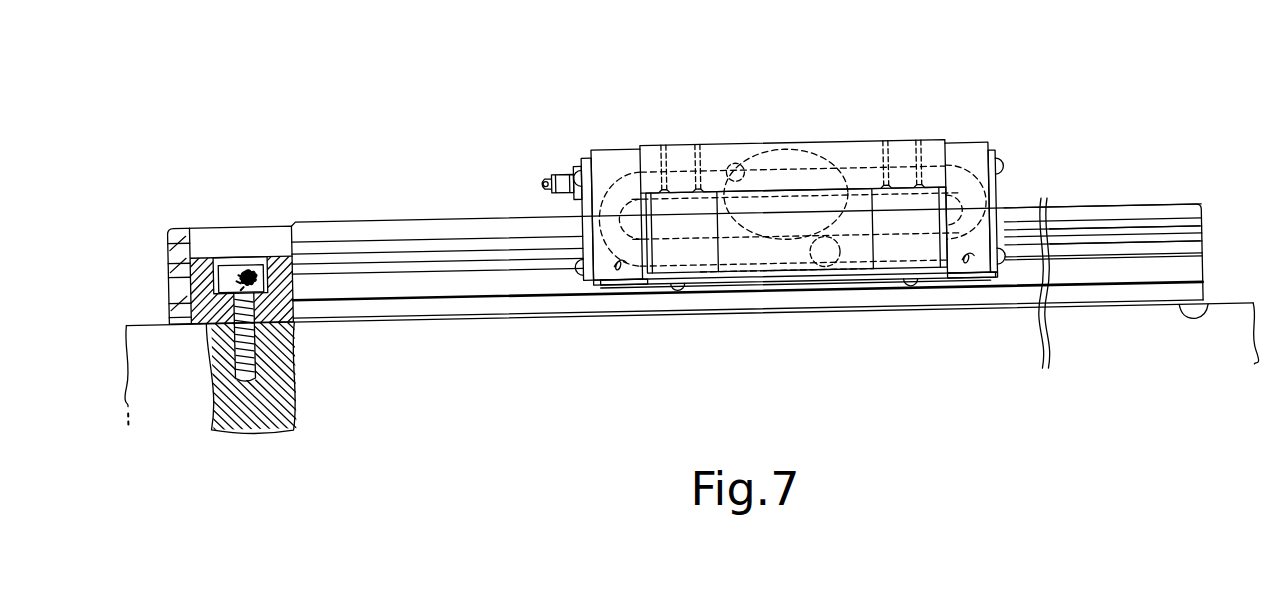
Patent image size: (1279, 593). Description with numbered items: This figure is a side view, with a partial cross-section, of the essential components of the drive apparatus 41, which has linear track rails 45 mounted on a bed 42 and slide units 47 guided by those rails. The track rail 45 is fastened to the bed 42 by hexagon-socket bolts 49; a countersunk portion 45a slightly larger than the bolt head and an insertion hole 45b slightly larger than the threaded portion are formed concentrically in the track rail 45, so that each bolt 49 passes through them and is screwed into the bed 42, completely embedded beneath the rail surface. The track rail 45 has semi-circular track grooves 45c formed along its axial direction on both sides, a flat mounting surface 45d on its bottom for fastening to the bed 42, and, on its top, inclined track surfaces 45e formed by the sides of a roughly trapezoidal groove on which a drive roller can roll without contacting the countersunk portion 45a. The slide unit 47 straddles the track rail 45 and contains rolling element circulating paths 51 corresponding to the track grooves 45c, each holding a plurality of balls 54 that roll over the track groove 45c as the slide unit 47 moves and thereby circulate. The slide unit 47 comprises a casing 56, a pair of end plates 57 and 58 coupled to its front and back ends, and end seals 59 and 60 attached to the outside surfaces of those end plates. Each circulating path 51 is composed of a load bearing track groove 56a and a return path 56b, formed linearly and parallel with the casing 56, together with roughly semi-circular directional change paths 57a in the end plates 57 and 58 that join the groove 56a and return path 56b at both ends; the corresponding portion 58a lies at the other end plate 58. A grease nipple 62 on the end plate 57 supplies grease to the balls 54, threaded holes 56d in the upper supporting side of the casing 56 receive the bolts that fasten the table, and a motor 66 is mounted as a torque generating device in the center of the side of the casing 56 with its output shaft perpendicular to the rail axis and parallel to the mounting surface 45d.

The drive apparatus 41 is at (1156, 93).
The bed 42 is at (1240, 320).
The track rail 45 is at (1213, 206).
The countersunk portion 45a is at (262, 252).
The insertion hole 45b is at (270, 352).
The track groove 45c is at (1130, 253).
The mounting surface 45d is at (1205, 311).
The track surface 45e is at (199, 236).
The slide unit 47 is at (940, 128).
The bolt 49 is at (238, 275).
The rolling element circulating path 51 is at (750, 295).
The ball 54 is at (728, 145).
The casing 56 is at (948, 139).
The load bearing track groove 56a is at (782, 290).
The return path 56b is at (830, 148).
The threaded hole 56d is at (672, 145).
The end plate 57 is at (613, 146).
The directional change path 57a is at (612, 293).
The end plate 58 is at (975, 143).
The right end cap bottom seal 58a is at (975, 295).
The end seal 59 is at (591, 168).
The end seal 60 is at (998, 143).
The grease nipple 62 is at (545, 183).
The motor 66 is at (798, 143).